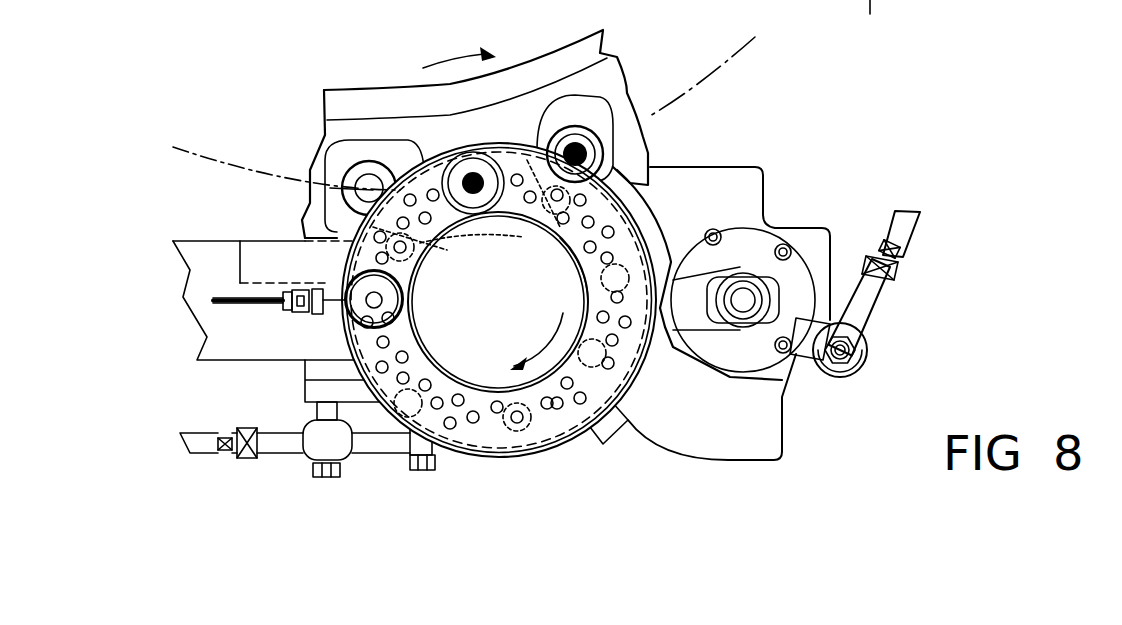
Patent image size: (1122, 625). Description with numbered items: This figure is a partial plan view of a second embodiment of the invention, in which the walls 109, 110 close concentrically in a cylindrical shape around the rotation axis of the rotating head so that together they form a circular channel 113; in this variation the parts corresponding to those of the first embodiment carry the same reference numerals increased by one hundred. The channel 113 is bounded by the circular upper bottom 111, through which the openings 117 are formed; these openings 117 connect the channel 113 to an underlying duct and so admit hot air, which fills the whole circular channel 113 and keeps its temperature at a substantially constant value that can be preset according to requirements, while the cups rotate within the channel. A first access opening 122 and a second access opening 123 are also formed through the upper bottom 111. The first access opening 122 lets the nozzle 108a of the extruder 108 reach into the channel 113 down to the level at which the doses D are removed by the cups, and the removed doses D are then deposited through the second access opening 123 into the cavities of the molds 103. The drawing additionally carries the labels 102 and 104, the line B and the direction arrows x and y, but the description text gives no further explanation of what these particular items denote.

The housing 102 is at (640, 155).
The molds 103 is at (575, 152).
The pipe bracket 104 is at (468, 463).
The extruder 108 is at (213, 262).
The nozzle 108a is at (375, 300).
The wall 109 is at (560, 447).
The wall 110 is at (478, 388).
The upper bottom 111 is at (590, 293).
The circular channel 113 is at (640, 224).
The openings 117 is at (583, 247).
The first access opening 122 is at (345, 312).
The second access opening 123 is at (448, 145).
The axis B is at (286, 151).
The doses D is at (618, 125).
The direction x is at (459, 44).
The direction y is at (536, 338).